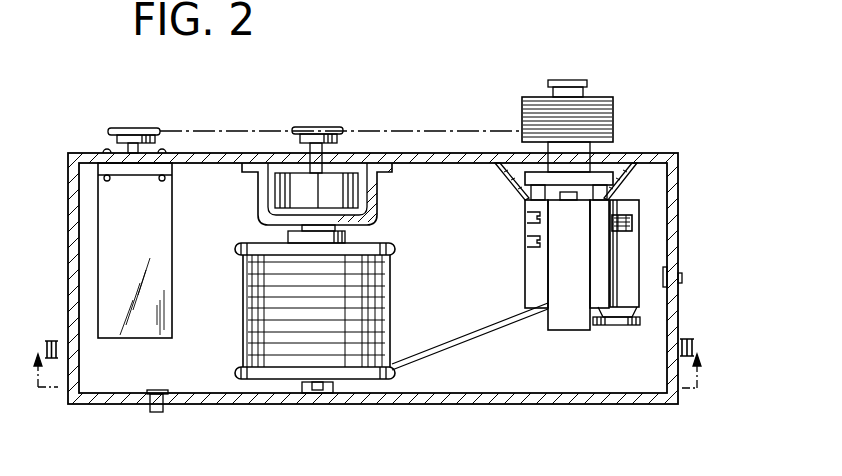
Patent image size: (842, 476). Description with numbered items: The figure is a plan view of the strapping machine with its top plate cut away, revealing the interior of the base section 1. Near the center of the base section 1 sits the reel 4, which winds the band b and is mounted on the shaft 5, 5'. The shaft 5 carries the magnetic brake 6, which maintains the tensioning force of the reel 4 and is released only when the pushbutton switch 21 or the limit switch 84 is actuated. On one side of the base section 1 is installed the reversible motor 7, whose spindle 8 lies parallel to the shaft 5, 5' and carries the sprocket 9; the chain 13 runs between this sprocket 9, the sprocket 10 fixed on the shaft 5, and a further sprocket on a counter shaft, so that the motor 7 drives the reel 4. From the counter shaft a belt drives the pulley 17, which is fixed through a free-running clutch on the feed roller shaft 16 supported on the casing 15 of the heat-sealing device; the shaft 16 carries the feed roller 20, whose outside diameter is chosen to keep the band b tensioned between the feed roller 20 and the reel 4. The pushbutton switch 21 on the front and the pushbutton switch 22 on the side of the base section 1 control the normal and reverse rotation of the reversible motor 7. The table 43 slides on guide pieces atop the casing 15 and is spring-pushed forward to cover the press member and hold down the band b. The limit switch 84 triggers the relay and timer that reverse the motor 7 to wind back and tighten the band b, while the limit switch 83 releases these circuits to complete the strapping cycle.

The base section 1 is at (428, 396).
The reel 4 is at (393, 247).
The shaft 5 is at (316, 190).
The shaft 5' is at (317, 414).
The magnetic brake 6 is at (347, 197).
The reversible motor 7 is at (155, 310).
The spindle 8 is at (126, 148).
The sprocket 9 is at (134, 128).
The sprocket 10 is at (316, 127).
The chain 13 is at (391, 130).
The casing 15 is at (632, 293).
The feed roller shaft 16 is at (618, 248).
The pulley 17 is at (612, 224).
The feed roller 20 is at (613, 324).
The pushbutton switch 21 is at (157, 413).
The pushbutton switch 22 is at (682, 278).
The table 43 is at (567, 305).
The limit switch 83 is at (526, 217).
The limit switch 84 is at (526, 243).
The band b is at (370, 310).